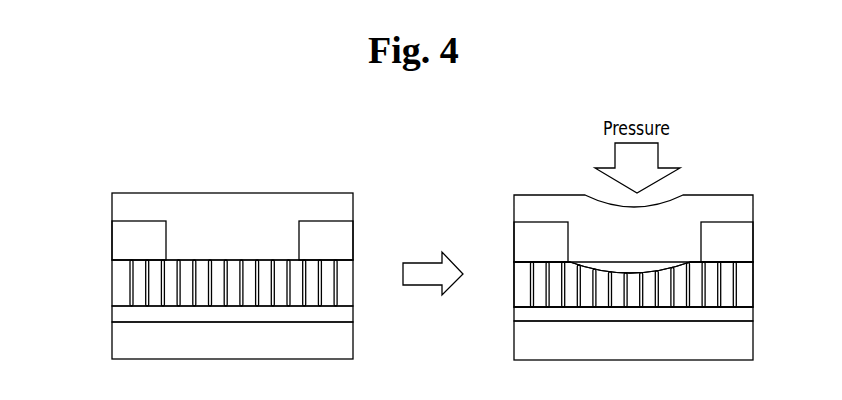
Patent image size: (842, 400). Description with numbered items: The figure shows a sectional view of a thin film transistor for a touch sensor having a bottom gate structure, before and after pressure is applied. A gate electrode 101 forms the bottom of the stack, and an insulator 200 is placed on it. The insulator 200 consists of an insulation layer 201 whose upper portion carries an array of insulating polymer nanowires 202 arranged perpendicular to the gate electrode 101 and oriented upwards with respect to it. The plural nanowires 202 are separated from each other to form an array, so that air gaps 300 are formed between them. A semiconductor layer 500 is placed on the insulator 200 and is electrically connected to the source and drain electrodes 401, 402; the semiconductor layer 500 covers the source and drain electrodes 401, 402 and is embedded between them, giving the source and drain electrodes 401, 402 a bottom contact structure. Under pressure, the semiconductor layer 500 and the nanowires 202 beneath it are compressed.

The gate electrode 101 is at (354, 354).
The insulator 200 is at (386, 295).
The insulation layer 201 is at (112, 314).
The insulating polymer nanowires 202 is at (112, 292).
The air gaps 300 is at (754, 278).
The source electrode 401 is at (112, 235).
The drain electrode 402 is at (354, 228).
The semiconductor layer 500 is at (255, 194).